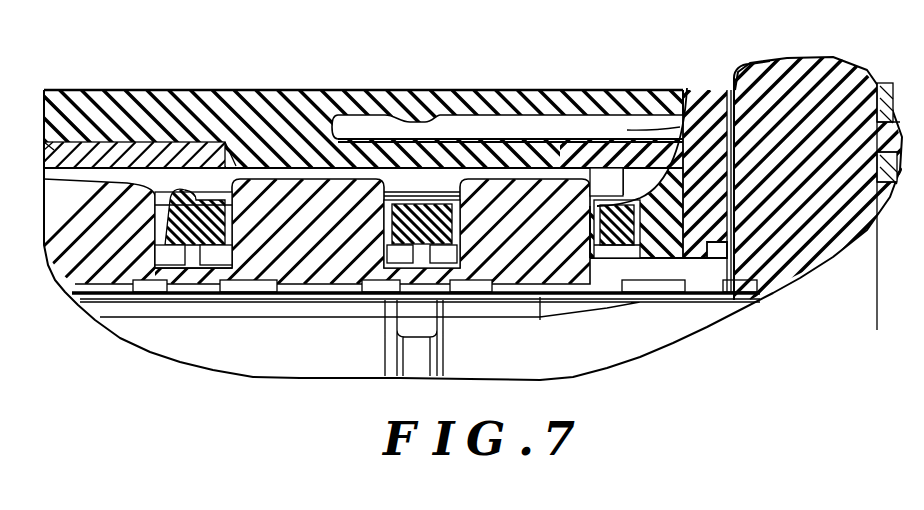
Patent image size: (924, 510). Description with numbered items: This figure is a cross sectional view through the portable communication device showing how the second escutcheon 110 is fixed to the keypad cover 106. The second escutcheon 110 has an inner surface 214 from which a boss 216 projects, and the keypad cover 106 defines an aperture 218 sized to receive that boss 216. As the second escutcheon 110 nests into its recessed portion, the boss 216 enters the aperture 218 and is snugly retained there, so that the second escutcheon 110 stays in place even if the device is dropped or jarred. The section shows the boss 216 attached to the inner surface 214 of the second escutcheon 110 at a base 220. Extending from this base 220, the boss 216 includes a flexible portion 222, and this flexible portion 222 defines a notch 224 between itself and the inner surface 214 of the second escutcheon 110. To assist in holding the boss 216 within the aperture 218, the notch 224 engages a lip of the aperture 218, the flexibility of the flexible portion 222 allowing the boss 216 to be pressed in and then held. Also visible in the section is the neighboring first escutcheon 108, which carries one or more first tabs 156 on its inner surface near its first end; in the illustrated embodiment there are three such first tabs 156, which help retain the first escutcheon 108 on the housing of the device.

The keypad cover 106 is at (44, 146).
The first escutcheon 108 is at (736, 72).
The second escutcheon 110 is at (147, 98).
The first tabs 156 is at (700, 293).
The inner surface 214 is at (457, 122).
The boss 216 is at (457, 135).
The aperture 218 is at (583, 88).
The base 220 is at (300, 100).
The flexible portion 222 is at (555, 165).
The notch 224 is at (711, 103).